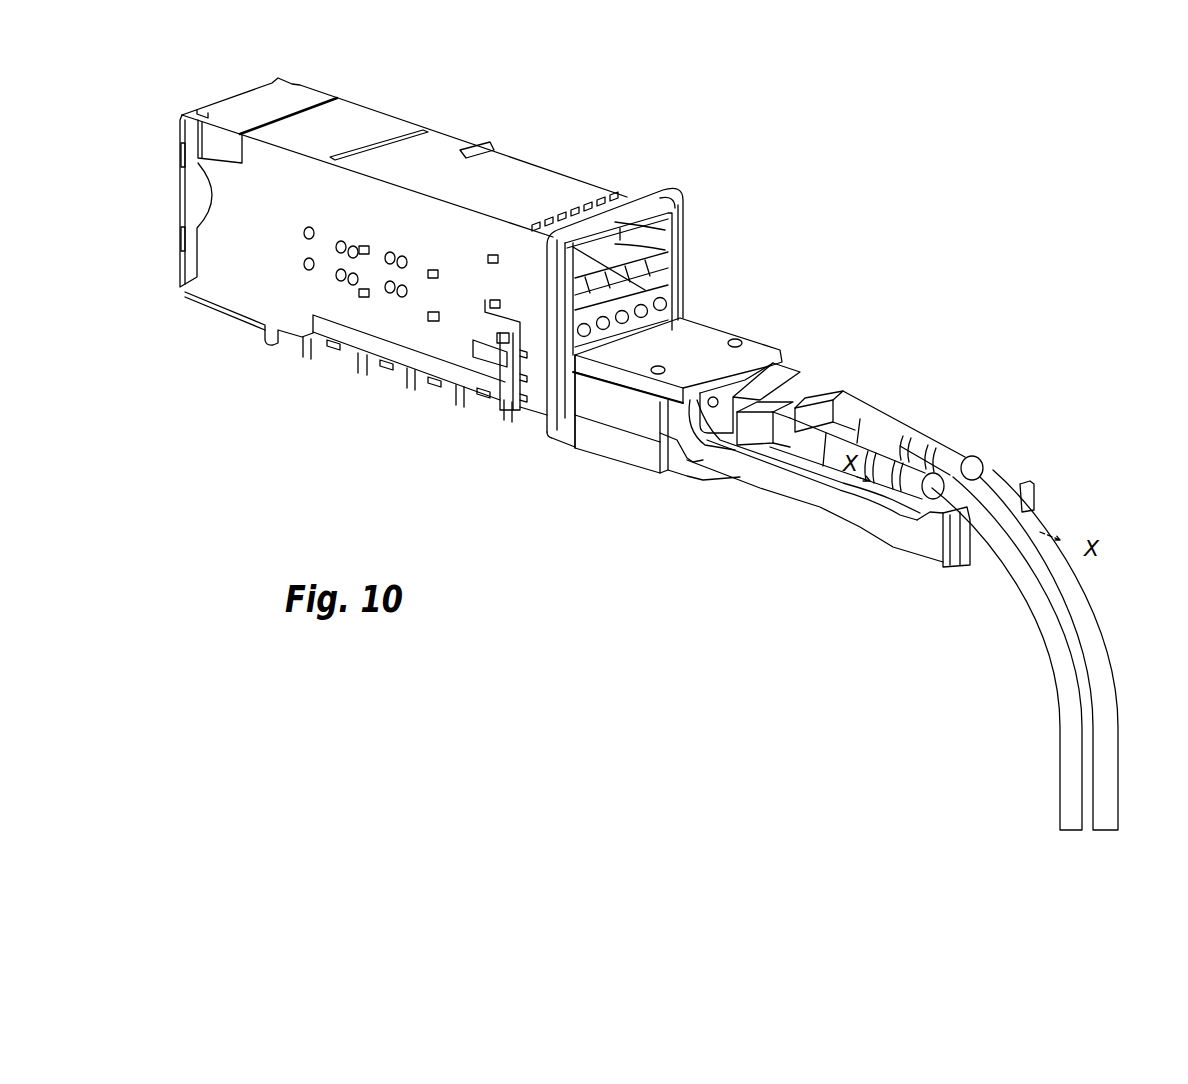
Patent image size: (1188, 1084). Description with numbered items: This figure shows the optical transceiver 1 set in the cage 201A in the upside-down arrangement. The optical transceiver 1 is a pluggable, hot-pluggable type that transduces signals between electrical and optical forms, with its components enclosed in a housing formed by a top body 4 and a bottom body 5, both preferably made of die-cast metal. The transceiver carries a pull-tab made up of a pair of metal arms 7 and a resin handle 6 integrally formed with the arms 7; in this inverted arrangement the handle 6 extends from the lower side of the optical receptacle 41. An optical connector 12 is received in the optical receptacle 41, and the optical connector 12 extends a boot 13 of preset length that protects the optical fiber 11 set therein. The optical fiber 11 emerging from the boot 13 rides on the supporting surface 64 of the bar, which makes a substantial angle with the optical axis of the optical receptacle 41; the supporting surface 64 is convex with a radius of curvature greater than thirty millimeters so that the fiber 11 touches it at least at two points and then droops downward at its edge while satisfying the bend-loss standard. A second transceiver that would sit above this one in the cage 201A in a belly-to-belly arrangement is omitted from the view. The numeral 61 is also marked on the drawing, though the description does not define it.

The optical transceiver 1 is at (740, 537).
The top body 4 is at (637, 453).
The bottom body 5 is at (710, 340).
The handle 6 is at (833, 523).
The arms 7 is at (610, 413).
The optical fiber 11 is at (1093, 615).
The optical connector 12 is at (820, 388).
The boot 13 is at (900, 433).
The optical receptacle 41 is at (757, 363).
The holder base 61 is at (890, 533).
The supporting surface 64 is at (1033, 503).
The cage 201A is at (250, 103).